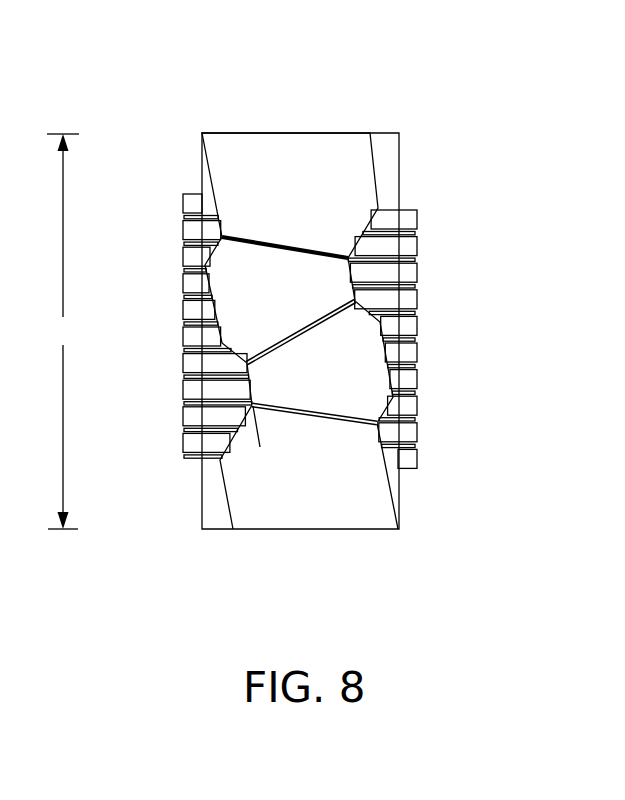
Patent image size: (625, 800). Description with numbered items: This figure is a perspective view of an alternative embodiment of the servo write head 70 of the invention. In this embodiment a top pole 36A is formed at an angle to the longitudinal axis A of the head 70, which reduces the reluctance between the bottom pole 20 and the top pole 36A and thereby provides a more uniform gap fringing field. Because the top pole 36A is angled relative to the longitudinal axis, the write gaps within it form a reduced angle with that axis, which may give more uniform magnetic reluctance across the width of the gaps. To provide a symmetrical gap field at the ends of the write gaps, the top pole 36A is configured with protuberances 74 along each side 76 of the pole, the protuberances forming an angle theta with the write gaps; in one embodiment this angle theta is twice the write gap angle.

The bottom pole 20 is at (202, 521).
The top pole 36A is at (340, 158).
The head 70 is at (340, 572).
The protuberances 74 is at (212, 300).
The side 76 is at (399, 497).